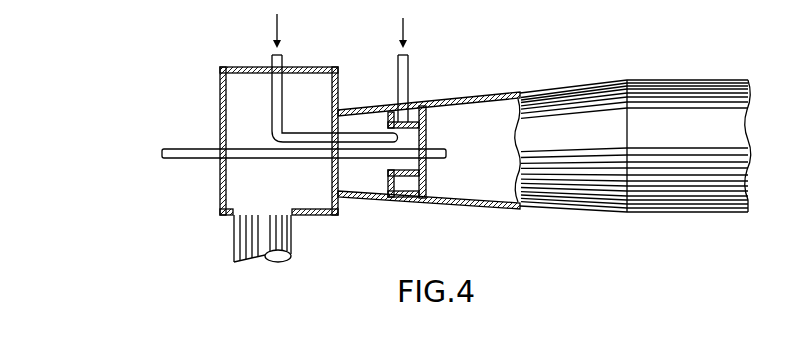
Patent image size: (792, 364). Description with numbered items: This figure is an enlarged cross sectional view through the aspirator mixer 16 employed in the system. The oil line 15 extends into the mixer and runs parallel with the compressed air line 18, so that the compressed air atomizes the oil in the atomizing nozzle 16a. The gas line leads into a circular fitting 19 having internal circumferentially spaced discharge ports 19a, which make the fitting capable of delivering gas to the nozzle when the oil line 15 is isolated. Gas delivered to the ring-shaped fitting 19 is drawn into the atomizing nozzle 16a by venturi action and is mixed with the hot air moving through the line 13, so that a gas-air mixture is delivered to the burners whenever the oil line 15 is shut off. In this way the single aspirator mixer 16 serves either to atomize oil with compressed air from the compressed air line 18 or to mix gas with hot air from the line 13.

The line 13 is at (698, 80).
The oil line 15 is at (178, 149).
The aspirator mixer 16 is at (470, 97).
The atomizing nozzle 16a is at (508, 205).
The compressed air line 18 is at (283, 93).
The circular fitting 19 is at (425, 197).
The discharge ports 19a is at (403, 170).